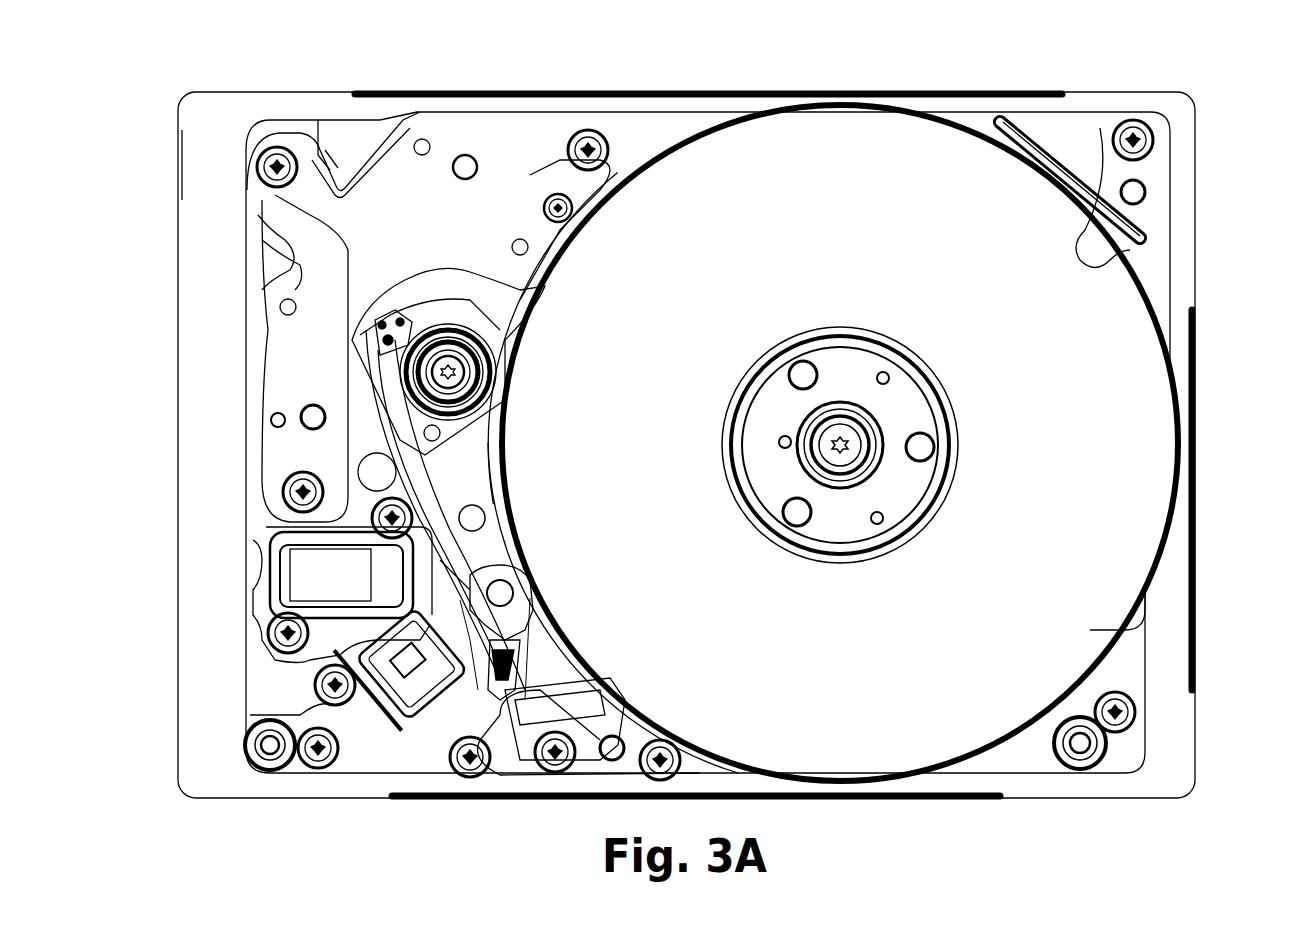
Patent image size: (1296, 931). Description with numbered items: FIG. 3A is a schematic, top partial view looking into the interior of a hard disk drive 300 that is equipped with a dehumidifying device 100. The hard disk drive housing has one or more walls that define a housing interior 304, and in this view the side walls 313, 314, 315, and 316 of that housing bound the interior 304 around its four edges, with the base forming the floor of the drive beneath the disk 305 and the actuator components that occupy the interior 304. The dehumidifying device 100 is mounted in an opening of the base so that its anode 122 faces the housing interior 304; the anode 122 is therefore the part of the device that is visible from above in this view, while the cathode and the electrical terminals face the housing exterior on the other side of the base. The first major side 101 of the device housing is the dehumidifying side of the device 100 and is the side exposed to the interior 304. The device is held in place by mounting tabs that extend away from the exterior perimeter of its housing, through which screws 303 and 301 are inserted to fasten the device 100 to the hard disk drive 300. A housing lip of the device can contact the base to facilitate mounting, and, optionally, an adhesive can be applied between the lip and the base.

The hard disk drive 300 is at (1118, 58).
The side wall 313 is at (1196, 262).
The side wall 314 is at (178, 140).
The side wall 315 is at (237, 92).
The side wall 316 is at (345, 800).
The housing interior 304 is at (657, 140).
The disk 305 is at (704, 283).
The screw 303 is at (372, 500).
The screw 301 is at (262, 633).
The dehumidifying device 100 is at (264, 540).
The anode 122 is at (297, 590).
The first major side 101 is at (388, 580).